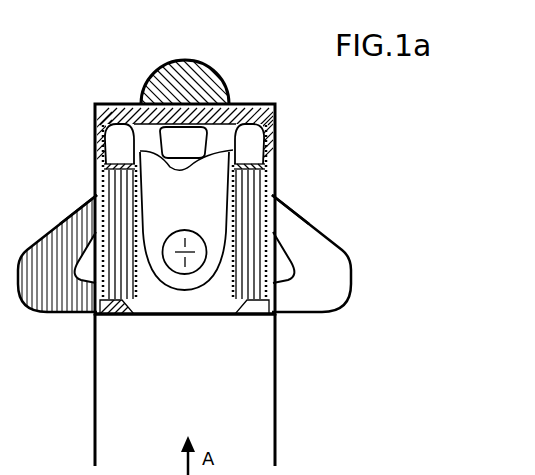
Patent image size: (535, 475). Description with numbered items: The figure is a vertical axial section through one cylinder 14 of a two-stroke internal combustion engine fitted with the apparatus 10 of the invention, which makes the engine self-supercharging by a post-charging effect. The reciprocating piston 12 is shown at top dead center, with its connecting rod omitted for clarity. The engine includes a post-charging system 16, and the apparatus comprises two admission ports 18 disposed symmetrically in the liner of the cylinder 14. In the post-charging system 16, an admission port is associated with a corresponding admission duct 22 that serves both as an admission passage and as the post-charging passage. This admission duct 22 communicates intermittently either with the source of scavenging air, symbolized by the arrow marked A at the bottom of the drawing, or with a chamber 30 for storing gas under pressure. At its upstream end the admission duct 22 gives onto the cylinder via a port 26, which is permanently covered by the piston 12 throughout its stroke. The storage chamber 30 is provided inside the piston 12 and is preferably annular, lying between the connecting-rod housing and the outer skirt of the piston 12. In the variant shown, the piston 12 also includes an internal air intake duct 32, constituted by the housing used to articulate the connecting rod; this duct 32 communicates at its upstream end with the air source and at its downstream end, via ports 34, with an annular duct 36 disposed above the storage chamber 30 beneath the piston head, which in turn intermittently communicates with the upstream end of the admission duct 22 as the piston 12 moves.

The apparatus 10 is at (322, 221).
The piston 12 is at (262, 315).
The cylinder 14 is at (277, 407).
The post-charging system 16 is at (252, 225).
The admission ports 18 is at (97, 196).
The admission duct 22 is at (22, 255).
The port 26 is at (88, 298).
The storage chamber 30 is at (226, 314).
The air intake duct 32 is at (206, 306).
The ports 34 is at (183, 150).
The annular duct 36 is at (110, 146).